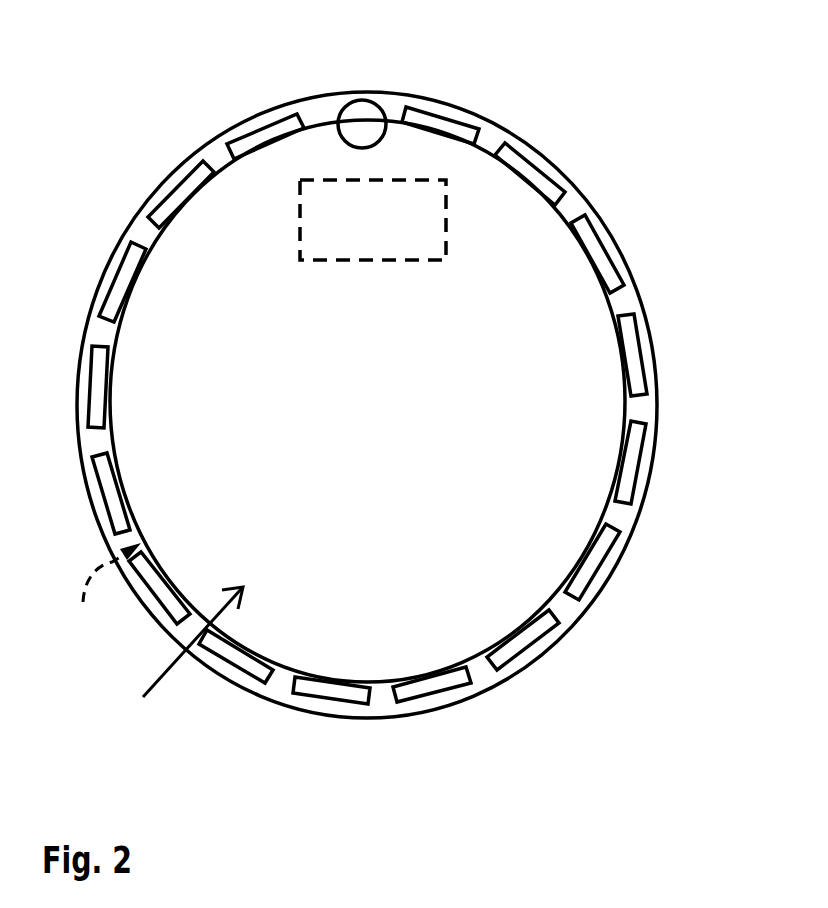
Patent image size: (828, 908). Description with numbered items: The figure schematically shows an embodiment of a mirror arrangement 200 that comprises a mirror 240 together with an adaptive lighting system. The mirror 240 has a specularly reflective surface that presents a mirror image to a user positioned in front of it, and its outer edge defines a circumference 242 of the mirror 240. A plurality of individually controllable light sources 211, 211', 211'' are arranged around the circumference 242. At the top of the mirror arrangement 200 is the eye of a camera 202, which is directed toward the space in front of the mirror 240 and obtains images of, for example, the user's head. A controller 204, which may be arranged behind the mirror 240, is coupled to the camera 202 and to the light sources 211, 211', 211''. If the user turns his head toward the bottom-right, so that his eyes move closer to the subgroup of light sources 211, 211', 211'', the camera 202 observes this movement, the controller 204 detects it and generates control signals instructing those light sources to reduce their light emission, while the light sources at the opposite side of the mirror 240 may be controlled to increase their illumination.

The mirror arrangement 200 is at (114, 92).
The camera 202 is at (362, 110).
The controller 204 is at (300, 215).
The individually controllable light source 211 is at (395, 405).
The individually controllable light source 211' is at (562, 665).
The individually controllable light source 211'' is at (473, 722).
The mirror 240 is at (179, 666).
The circumference 242 is at (94, 593).